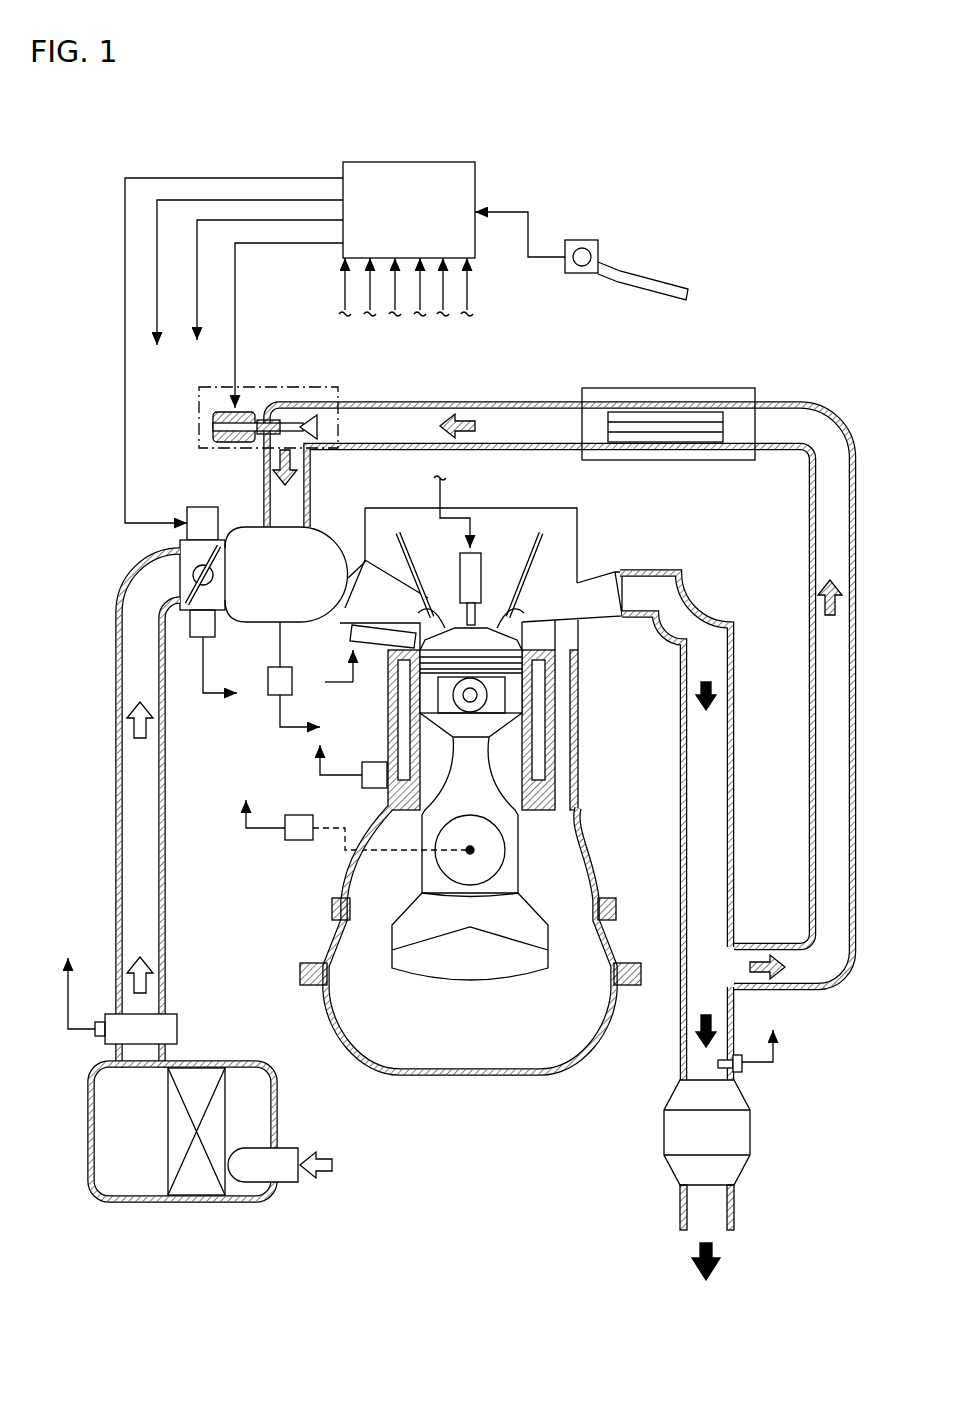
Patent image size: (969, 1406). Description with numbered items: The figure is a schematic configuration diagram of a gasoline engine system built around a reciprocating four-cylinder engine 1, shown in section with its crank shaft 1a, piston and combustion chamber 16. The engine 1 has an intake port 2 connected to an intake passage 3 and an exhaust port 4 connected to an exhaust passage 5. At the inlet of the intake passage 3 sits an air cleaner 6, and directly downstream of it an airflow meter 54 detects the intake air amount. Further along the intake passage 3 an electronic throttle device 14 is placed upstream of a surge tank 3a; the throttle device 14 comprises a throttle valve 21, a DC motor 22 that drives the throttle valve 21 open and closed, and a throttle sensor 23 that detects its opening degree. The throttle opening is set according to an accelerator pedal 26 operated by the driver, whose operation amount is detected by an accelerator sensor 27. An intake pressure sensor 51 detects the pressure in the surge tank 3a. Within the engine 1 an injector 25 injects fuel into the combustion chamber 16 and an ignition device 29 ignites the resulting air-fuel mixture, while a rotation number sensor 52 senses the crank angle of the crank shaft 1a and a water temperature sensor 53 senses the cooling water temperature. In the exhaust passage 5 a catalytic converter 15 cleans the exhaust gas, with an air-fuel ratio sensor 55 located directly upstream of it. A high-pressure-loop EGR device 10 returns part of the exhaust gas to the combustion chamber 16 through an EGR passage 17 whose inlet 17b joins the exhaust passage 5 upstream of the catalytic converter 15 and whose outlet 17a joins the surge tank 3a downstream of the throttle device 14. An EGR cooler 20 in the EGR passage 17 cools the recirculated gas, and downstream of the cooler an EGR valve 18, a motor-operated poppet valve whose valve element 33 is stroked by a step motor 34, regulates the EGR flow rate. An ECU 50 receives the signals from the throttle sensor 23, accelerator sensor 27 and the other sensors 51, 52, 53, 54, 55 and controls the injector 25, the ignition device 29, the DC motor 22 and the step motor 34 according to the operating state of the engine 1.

The engine 1 is at (590, 515).
The crank shaft 1a is at (500, 847).
The intake port 2 is at (324, 688).
The intake passage 3 is at (115, 783).
The surge tank 3a is at (258, 612).
The exhaust port 4 is at (565, 617).
The exhaust passage 5 is at (680, 791).
The air cleaner 6 is at (278, 1096).
The EGR device 10 is at (745, 375).
The electronic throttle device 14 is at (178, 579).
The catalytic converter 15 is at (751, 1133).
The combustion chamber 16 is at (540, 672).
The EGR passage 17 is at (541, 401).
The outlet of the EGR passage 17a is at (312, 528).
The inlet of the EGR passage 17b is at (744, 947).
The EGR valve 18 is at (272, 385).
The EGR cooler 20 is at (655, 412).
The throttle valve 21 is at (182, 539).
The DC motor 22 is at (204, 507).
The throttle sensor 23 is at (200, 640).
The injector 25 is at (373, 648).
The accelerator pedal 26 is at (666, 280).
The accelerator sensor 27 is at (583, 240).
The ignition device 29 is at (492, 558).
The valve element 33 is at (317, 413).
The step motor 34 is at (213, 426).
The ECU 50 is at (416, 161).
The intake pressure sensor 51 is at (268, 693).
The rotation number sensor 52 is at (298, 815).
The water temperature sensor 53 is at (366, 720).
The airflow meter 54 is at (175, 1028).
The air-fuel ratio sensor 55 is at (742, 1070).